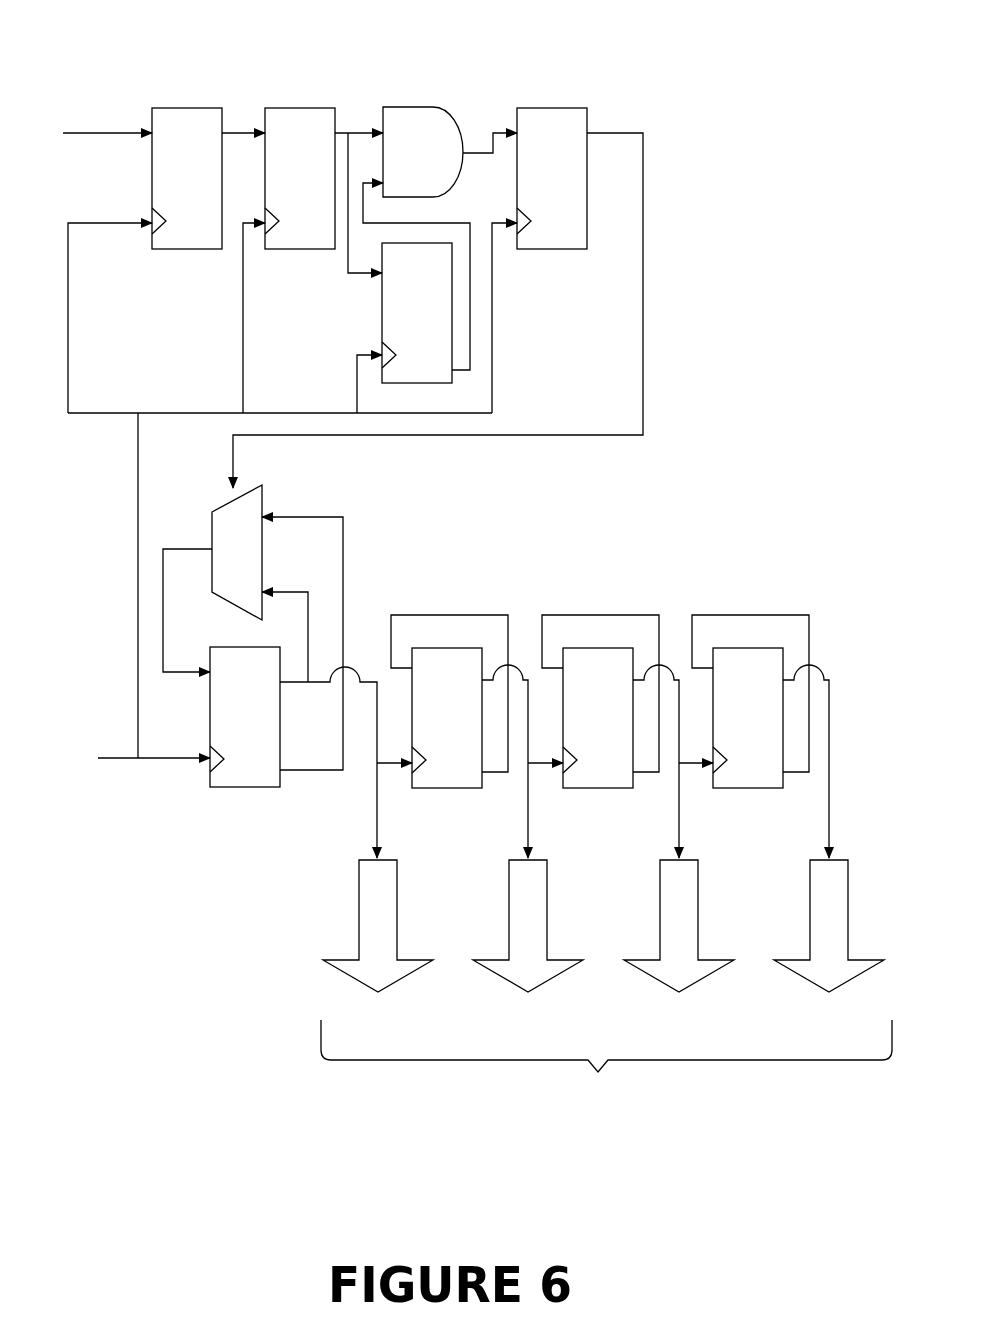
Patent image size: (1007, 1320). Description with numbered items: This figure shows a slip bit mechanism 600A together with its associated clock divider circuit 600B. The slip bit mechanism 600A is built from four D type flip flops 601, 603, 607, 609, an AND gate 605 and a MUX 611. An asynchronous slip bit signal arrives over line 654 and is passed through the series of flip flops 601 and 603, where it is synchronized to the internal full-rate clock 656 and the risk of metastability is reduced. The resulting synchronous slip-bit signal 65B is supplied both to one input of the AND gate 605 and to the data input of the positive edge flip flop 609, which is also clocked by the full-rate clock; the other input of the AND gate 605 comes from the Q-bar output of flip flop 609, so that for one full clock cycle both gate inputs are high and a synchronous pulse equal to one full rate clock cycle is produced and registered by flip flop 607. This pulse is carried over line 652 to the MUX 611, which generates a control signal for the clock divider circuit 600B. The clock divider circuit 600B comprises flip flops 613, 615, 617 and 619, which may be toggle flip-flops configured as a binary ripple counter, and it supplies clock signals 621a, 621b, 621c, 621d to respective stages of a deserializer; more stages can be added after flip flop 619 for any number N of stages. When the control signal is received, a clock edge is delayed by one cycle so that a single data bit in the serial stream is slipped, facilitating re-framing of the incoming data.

The slip bit mechanism 600A is at (52, 47).
The clock divider circuit 600B is at (745, 580).
The D type flip flop 601 is at (170, 189).
The D type flip flop 603 is at (283, 189).
The AND gate 605 is at (401, 162).
The D type flip flop 607 is at (535, 189).
The D type flip flop 609 is at (400, 324).
The MUX 611 is at (220, 567).
The D type flip flop 613 is at (228, 728).
The D type flip flop 615 is at (430, 729).
The D type flip flop 617 is at (581, 729).
The D type flip flop 619 is at (731, 729).
The clock divider circuit output 621a is at (378, 953).
The clock divider circuit output 621b is at (528, 953).
The clock divider circuit output 621c is at (679, 953).
The clock divider circuit output 621d is at (829, 953).
The line 652 is at (643, 273).
The line 654 is at (96, 132).
The internal full-rate clock 656 is at (137, 583).
The slip bit delayed signal 65B is at (352, 131).